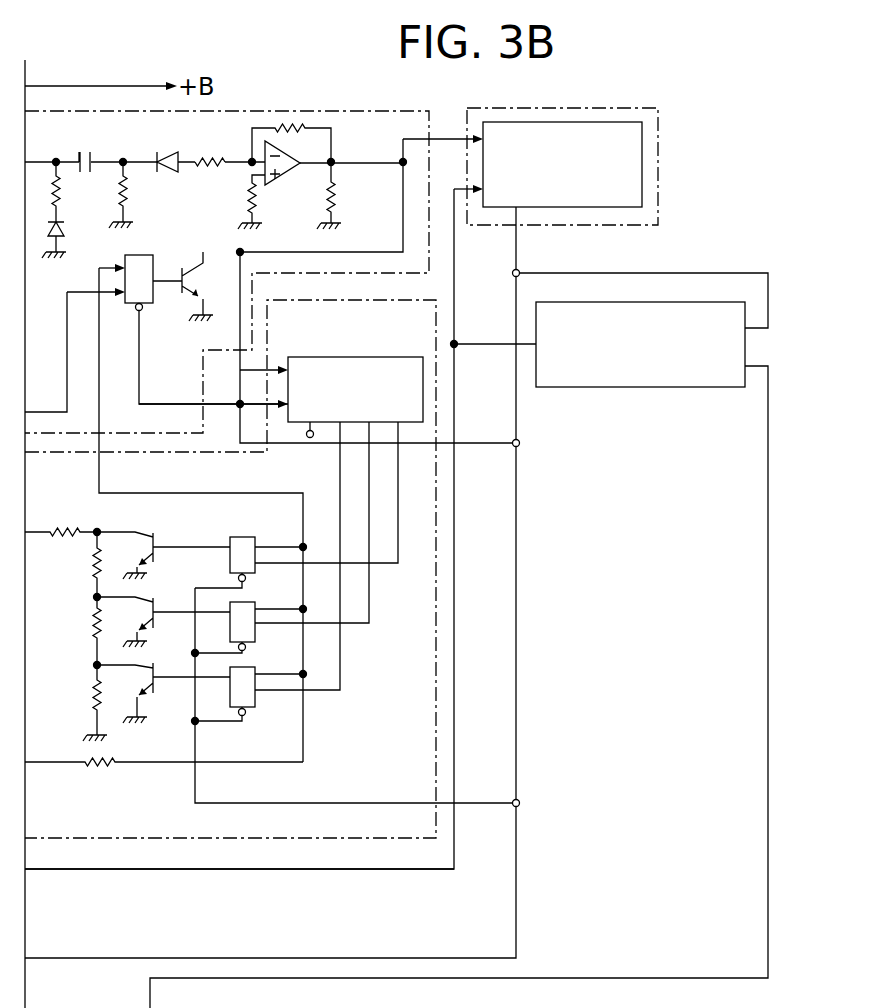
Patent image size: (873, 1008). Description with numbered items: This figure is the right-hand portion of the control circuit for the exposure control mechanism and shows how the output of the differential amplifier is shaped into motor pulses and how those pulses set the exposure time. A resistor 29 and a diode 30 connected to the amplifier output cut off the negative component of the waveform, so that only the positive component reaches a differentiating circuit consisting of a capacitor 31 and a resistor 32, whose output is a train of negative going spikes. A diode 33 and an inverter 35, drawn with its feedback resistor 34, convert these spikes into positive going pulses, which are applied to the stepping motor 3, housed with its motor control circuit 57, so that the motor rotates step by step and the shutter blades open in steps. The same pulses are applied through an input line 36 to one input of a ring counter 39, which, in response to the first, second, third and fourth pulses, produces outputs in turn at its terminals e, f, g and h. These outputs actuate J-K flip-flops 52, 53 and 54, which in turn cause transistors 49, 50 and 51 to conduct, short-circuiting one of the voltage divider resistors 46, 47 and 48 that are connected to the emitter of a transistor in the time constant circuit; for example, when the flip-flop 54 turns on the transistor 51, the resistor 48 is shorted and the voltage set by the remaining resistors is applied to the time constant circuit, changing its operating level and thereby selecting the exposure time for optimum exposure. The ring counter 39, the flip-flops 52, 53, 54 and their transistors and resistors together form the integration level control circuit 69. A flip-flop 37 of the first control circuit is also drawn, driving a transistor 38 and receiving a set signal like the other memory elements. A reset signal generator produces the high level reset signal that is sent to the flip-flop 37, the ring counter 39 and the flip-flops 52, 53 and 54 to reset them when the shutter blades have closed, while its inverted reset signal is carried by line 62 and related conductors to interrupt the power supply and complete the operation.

The stepping motor 3 is at (642, 178).
The resistor 29 is at (60, 195).
The diode 30 is at (62, 234).
The capacitor 31 is at (84, 152).
The resistor 32 is at (134, 195).
The diode 33 is at (163, 152).
The feedback resistor 34 is at (294, 125).
The inverter 35 is at (285, 175).
The input line 36 is at (238, 403).
The flip-flop 37 is at (137, 312).
The transistor 38 is at (192, 276).
The ring counter 39 is at (355, 357).
The resistor 46 is at (62, 530).
The resistor 47 is at (94, 570).
The resistor 48 is at (94, 701).
The transistor 49 is at (138, 542).
The transistor 50 is at (148, 606).
The transistor 51 is at (151, 672).
The J-K flip-flop 52 is at (257, 540).
The J-K flip-flop 53 is at (257, 603).
The J-K flip-flop 54 is at (257, 670).
The motor control circuit 57 is at (660, 114).
The signal line 62 is at (188, 790).
The integration level control circuit 69 is at (373, 858).